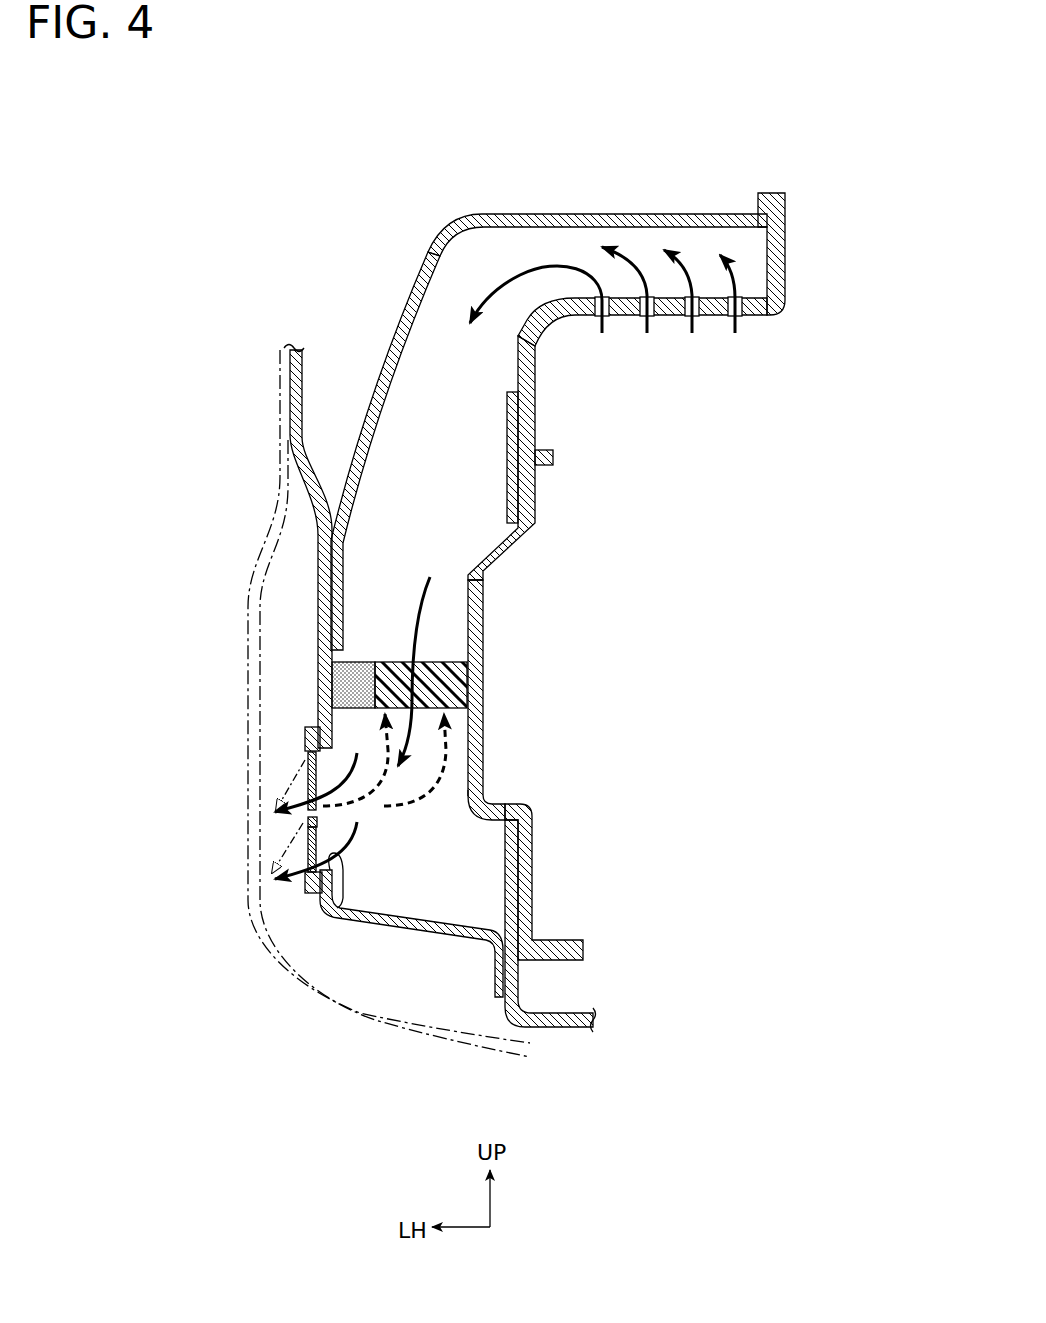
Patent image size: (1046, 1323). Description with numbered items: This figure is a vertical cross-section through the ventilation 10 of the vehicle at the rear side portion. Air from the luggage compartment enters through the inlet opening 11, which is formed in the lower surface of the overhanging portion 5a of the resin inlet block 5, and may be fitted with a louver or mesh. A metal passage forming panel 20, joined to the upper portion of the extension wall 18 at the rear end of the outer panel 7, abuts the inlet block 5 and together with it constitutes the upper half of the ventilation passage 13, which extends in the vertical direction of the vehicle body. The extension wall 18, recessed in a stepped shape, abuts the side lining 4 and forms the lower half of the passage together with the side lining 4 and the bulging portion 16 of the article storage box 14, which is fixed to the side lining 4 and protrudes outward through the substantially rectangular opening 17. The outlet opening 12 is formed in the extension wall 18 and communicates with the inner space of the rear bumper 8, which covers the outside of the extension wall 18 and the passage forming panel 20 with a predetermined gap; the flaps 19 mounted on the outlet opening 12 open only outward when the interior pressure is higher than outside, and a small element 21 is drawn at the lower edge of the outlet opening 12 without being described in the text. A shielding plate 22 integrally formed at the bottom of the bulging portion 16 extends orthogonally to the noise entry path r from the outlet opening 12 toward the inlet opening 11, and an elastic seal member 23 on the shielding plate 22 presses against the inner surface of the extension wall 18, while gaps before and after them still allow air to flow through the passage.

The side lining 4 is at (503, 906).
The inlet block 5 is at (830, 254).
The overhanging portion 5a is at (788, 242).
The outer panel 7 is at (236, 547).
The rear bumper 8 is at (263, 943).
The ventilation 10 is at (522, 359).
The inlet opening 11 is at (737, 323).
The outlet opening 12 is at (327, 906).
The ventilation passage 13 is at (390, 480).
The article storage box 14 is at (538, 490).
The bulging portion 16 is at (470, 795).
The opening 17 is at (510, 818).
The extension wall 18 is at (322, 653).
The flaps 19 is at (307, 762).
The passage forming panel 20 is at (447, 232).
The lip 21 is at (303, 883).
The shielding plate 22 is at (436, 660).
The seal member 23 is at (352, 640).
The noise entry path r is at (446, 753).